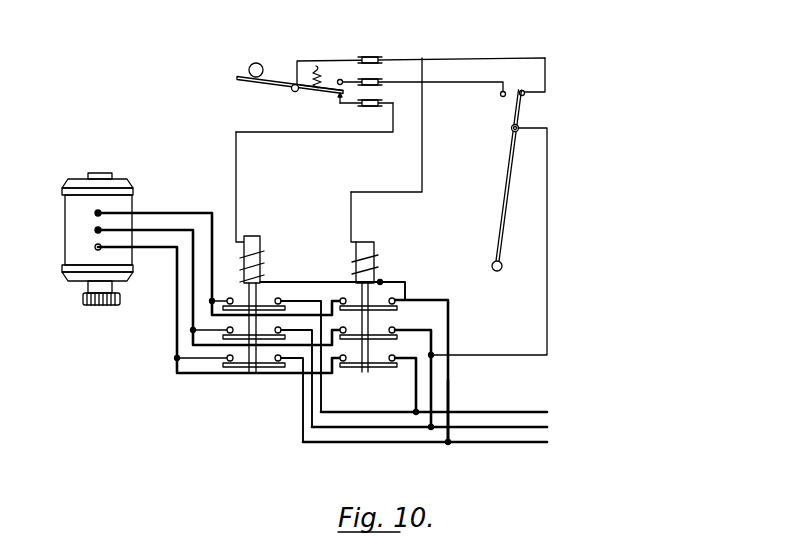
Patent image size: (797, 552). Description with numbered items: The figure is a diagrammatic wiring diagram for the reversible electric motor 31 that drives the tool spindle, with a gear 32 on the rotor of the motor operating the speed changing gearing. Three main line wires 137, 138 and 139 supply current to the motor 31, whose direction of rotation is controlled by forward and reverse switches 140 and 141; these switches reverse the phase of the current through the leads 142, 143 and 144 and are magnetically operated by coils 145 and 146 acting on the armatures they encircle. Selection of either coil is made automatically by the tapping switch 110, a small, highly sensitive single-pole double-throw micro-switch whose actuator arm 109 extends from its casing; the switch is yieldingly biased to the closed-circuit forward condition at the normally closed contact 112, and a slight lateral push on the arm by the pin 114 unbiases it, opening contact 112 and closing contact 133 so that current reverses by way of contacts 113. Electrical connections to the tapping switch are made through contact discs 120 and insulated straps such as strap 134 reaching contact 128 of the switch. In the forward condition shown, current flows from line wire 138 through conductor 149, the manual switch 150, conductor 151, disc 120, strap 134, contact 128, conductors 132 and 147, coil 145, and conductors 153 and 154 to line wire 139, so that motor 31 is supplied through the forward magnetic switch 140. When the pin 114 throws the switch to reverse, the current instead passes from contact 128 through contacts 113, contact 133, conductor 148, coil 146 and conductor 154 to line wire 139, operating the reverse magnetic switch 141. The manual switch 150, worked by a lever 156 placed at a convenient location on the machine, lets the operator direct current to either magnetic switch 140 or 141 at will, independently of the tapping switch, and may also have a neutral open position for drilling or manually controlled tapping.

The reversible electric motor 31 is at (72, 237).
The gear 32 is at (83, 300).
The actuator arm 109 is at (237, 85).
The automatic tapping switch 110 is at (303, 90).
The normally closed contact 112 is at (337, 98).
The contacts 113 is at (338, 81).
The pin 114 is at (250, 64).
The contact discs 120 is at (371, 57).
The contact 128 is at (293, 84).
The conductor 132 is at (350, 106).
The contact 133 is at (347, 86).
The strap 134 is at (310, 61).
The main line wire 137 is at (547, 412).
The main line wire 138 is at (547, 427).
The main line wire 139 is at (547, 442).
The forward switch 140 is at (253, 367).
The reverse switch 141 is at (370, 368).
The lead 142 is at (155, 212).
The lead 143 is at (173, 227).
The lead 144 is at (160, 250).
The coil 145 is at (262, 250).
The coil 146 is at (375, 248).
The conductor 147 is at (372, 133).
The conductor 148 is at (422, 145).
The conductor 149 is at (470, 354).
The manual switch 150 is at (458, 80).
The conductor 151 is at (537, 57).
The conductor 153 is at (307, 280).
The conductor 154 is at (452, 390).
The lever 156 is at (505, 247).